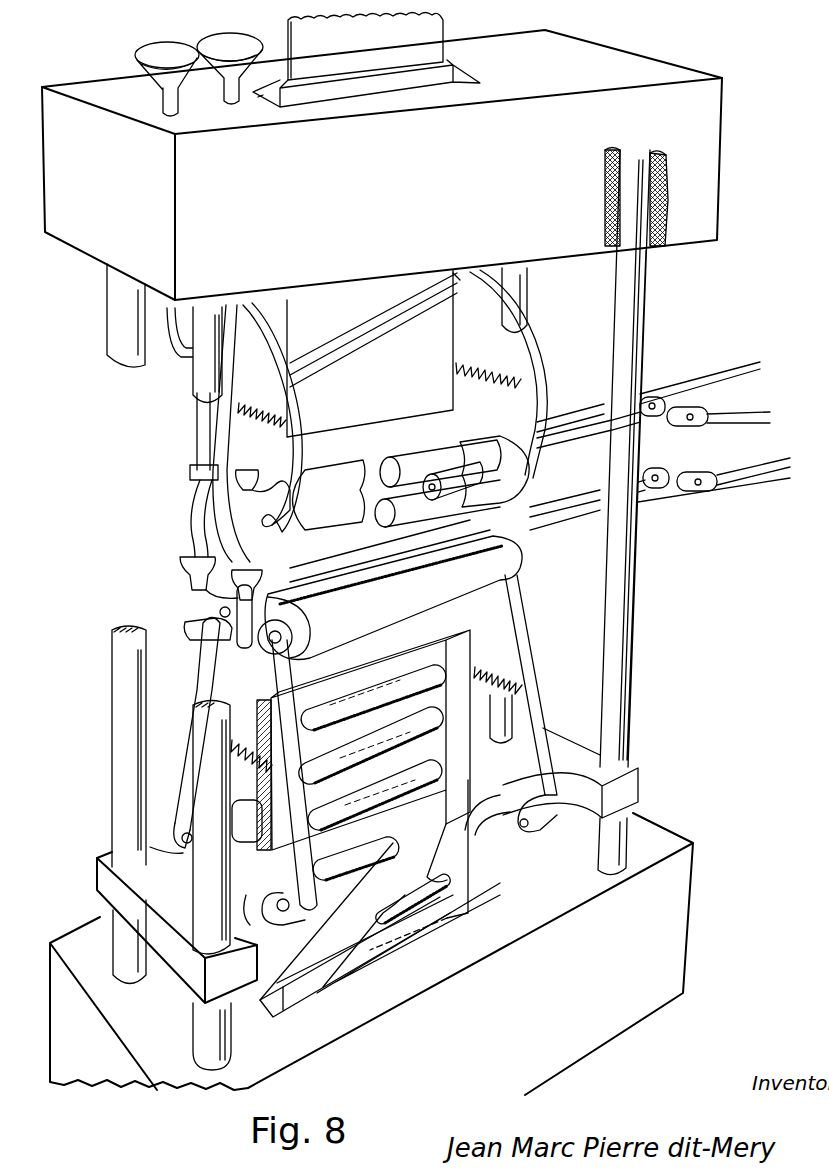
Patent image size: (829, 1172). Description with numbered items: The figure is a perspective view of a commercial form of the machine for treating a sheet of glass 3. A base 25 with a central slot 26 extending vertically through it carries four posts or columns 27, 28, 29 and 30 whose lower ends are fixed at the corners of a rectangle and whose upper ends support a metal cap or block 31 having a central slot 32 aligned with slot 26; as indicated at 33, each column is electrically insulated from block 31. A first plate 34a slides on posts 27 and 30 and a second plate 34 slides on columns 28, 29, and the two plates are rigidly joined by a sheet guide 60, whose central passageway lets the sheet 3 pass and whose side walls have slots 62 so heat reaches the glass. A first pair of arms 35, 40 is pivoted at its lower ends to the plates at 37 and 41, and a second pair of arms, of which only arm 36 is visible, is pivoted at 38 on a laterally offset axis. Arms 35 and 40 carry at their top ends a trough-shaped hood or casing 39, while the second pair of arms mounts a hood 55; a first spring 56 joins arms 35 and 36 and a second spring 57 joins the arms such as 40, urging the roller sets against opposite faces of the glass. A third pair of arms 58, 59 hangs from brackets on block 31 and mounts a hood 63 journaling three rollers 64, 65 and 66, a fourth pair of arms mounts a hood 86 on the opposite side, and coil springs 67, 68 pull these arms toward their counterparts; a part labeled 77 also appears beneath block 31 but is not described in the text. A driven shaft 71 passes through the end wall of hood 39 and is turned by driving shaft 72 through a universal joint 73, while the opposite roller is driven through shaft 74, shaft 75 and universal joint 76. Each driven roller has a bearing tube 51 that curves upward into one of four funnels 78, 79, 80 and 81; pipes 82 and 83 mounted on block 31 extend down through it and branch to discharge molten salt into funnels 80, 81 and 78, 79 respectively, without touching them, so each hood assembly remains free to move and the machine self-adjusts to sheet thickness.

The sheet of glass 3 is at (443, 52).
The base 25 is at (673, 928).
The central slot 26 is at (390, 943).
The post or column 27 is at (625, 623).
The post or column 28 is at (205, 878).
The post or column 29 is at (105, 318).
The post or column 30 is at (527, 290).
The metal cap or block 31 is at (705, 157).
The central slot 32 is at (370, 90).
The electrical insulation 33 is at (652, 240).
The second plate 34 is at (97, 878).
The first plate 34a is at (640, 786).
The arm 35 is at (297, 915).
The arm 36 is at (200, 677).
The pivot 37 is at (280, 900).
The pivot 38 is at (183, 833).
The trough-shaped hood or casing 39 is at (522, 565).
The arm 40 is at (538, 700).
The pivot 41 is at (522, 820).
The bearing tube 51 is at (298, 609).
The hood 55 is at (200, 622).
The first spring 56 is at (241, 765).
The second spring 57 is at (502, 738).
The arm 58 is at (292, 407).
The arm 59 is at (528, 395).
The sheet guide 60 is at (460, 895).
The slots 62 is at (428, 675).
The hood 63 is at (513, 479).
The roller 64 is at (390, 455).
The roller 65 is at (378, 516).
The roller 66 is at (455, 462).
The coil spring 67 is at (250, 404).
The coil spring 68 is at (466, 366).
The driven shaft 71 is at (563, 518).
The driving shaft 72 is at (757, 470).
The universal joint 73 is at (690, 494).
The shaft 74 is at (592, 490).
The shaft 75 is at (723, 462).
The universal joint 76 is at (660, 470).
The back panel 77 is at (445, 332).
The funnel 78 is at (245, 650).
The funnel 79 is at (178, 572).
The funnel 80 is at (256, 468).
The funnel 81 is at (197, 481).
The pipe 82 is at (238, 90).
The pipe 83 is at (163, 97).
The hood 86 is at (195, 510).